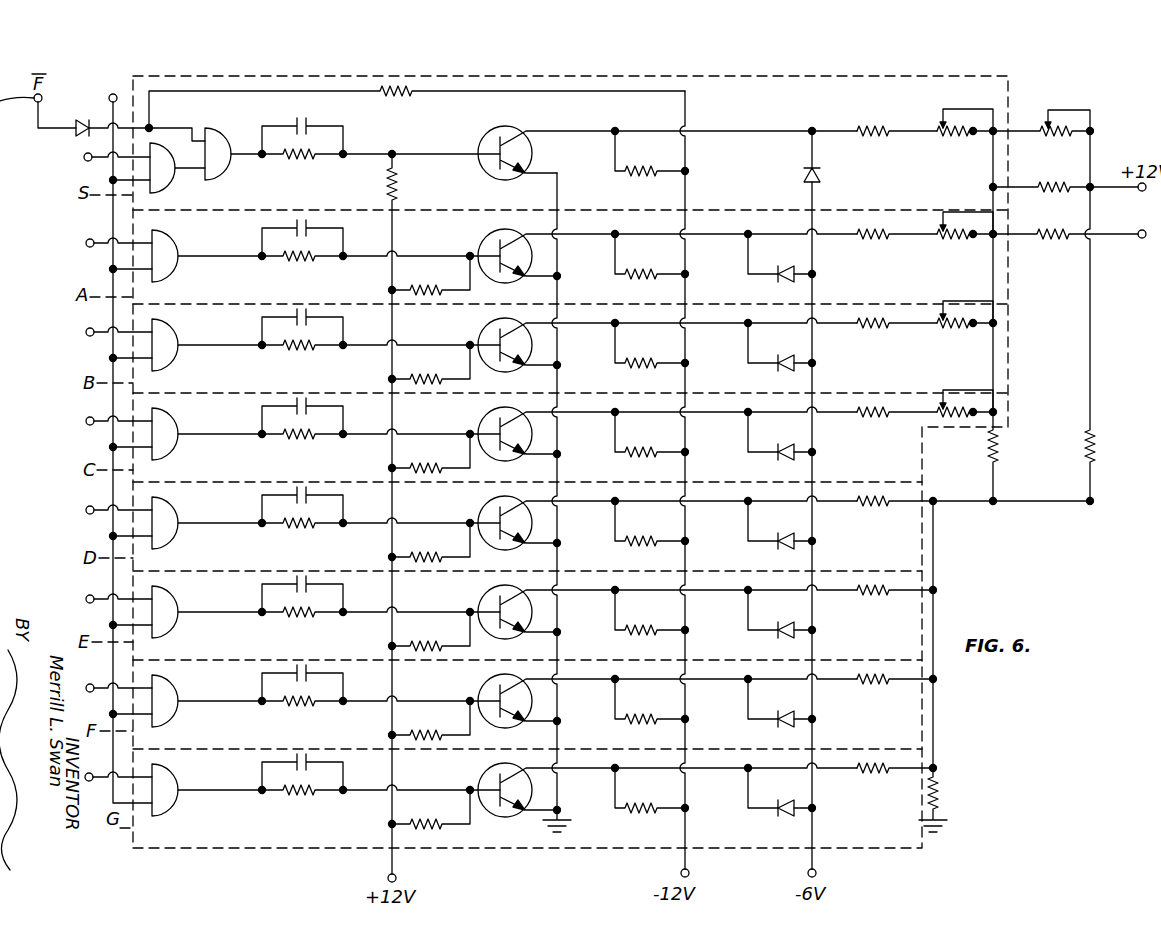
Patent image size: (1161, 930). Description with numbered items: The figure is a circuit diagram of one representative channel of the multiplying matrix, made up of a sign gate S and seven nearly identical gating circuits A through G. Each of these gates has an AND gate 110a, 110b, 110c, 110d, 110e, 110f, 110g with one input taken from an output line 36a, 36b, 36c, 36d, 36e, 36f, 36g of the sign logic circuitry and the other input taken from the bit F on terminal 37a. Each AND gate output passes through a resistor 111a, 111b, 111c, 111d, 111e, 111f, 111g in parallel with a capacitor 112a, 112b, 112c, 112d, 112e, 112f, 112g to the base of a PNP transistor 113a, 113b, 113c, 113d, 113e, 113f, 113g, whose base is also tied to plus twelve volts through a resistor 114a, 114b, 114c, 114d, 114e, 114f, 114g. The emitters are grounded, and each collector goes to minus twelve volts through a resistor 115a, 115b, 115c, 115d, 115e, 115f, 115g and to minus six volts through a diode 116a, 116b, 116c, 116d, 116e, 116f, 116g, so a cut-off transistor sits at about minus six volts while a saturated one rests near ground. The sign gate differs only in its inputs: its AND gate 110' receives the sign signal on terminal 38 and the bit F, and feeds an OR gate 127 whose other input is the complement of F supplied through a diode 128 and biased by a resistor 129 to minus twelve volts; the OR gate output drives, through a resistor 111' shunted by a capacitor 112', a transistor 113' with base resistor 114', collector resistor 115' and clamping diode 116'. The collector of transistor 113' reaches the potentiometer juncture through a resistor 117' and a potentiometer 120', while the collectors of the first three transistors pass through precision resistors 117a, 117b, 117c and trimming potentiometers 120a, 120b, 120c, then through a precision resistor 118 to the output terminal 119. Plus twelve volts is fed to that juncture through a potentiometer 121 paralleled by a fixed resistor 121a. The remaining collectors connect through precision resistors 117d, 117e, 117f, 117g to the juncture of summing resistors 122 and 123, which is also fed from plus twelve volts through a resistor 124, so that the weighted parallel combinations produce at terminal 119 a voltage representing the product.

The output line 36a is at (89, 241).
The output line 36b is at (89, 330).
The output line 36c is at (89, 419).
The output line 36d is at (89, 508).
The output line 36e is at (89, 597).
The output line 36f is at (89, 686).
The output line 36g is at (89, 783).
The terminal 37a is at (104, 98).
The terminal 38 is at (76, 163).
The AND gate 110' is at (189, 174).
The AND gate 110a is at (175, 233).
The AND gate 110b is at (175, 322).
The AND gate 110c is at (175, 411).
The AND gate 110d is at (175, 500).
The AND gate 110e is at (175, 589).
The AND gate 110f is at (175, 678).
The AND gate 110g is at (175, 767).
The resistor 111' is at (302, 169).
The resistor 111a is at (291, 261).
The resistor 111b is at (291, 350).
The resistor 111c is at (291, 439).
The resistor 111d is at (291, 528).
The resistor 111e is at (291, 617).
The resistor 111f is at (291, 706).
The resistor 111g is at (291, 795).
The capacitor 112' is at (315, 125).
The capacitor 112a is at (303, 219).
The capacitor 112b is at (303, 308).
The capacitor 112c is at (303, 397).
The capacitor 112d is at (303, 486).
The capacitor 112e is at (303, 575).
The capacitor 112f is at (303, 664).
The capacitor 112g is at (303, 753).
The PNP transistor 113' is at (546, 139).
The PNP transistor 113a is at (486, 236).
The PNP transistor 113b is at (486, 325).
The PNP transistor 113c is at (486, 414).
The PNP transistor 113d is at (486, 503).
The PNP transistor 113e is at (486, 592).
The PNP transistor 113f is at (486, 681).
The PNP transistor 113g is at (486, 770).
The resistor 114' is at (420, 222).
The resistor 114a is at (446, 290).
The resistor 114b is at (446, 379).
The resistor 114c is at (446, 468).
The resistor 114d is at (446, 557).
The resistor 114e is at (446, 646).
The resistor 114f is at (446, 735).
The resistor 114g is at (446, 824).
The resistor 115' is at (652, 168).
The resistor 115a is at (640, 278).
The resistor 115b is at (640, 367).
The resistor 115c is at (640, 456).
The resistor 115d is at (640, 545).
The resistor 115e is at (640, 634).
The resistor 115f is at (640, 723).
The resistor 115g is at (632, 812).
The diode 116' is at (791, 186).
The diode 116a is at (786, 280).
The diode 116b is at (786, 369).
The diode 116c is at (786, 458).
The diode 116d is at (786, 547).
The diode 116e is at (786, 636).
The diode 116f is at (786, 725).
The diode 116g is at (786, 814).
The resistor 117' is at (883, 124).
The precision resistor 117a is at (865, 230).
The precision resistor 117b is at (865, 319).
The precision resistor 117c is at (866, 408).
The precision resistor 117d is at (864, 497).
The precision resistor 117e is at (864, 586).
The precision resistor 117f is at (864, 675).
The precision resistor 117g is at (862, 764).
The precision resistor 118 is at (1052, 230).
The output terminal 119 is at (1144, 230).
The potentiometer 120' is at (961, 120).
The potentiometer 120a is at (940, 214).
The potentiometer 120b is at (940, 303).
The potentiometer 120c is at (940, 392).
The potentiometer 121 is at (1045, 120).
The fixed resistor 121a is at (1056, 182).
The resistor 122 is at (990, 450).
The resistor 123 is at (928, 800).
The resistor 124 is at (1088, 432).
The OR gate 127 is at (228, 130).
The diode 128 is at (78, 126).
The resistor 129 is at (420, 88).